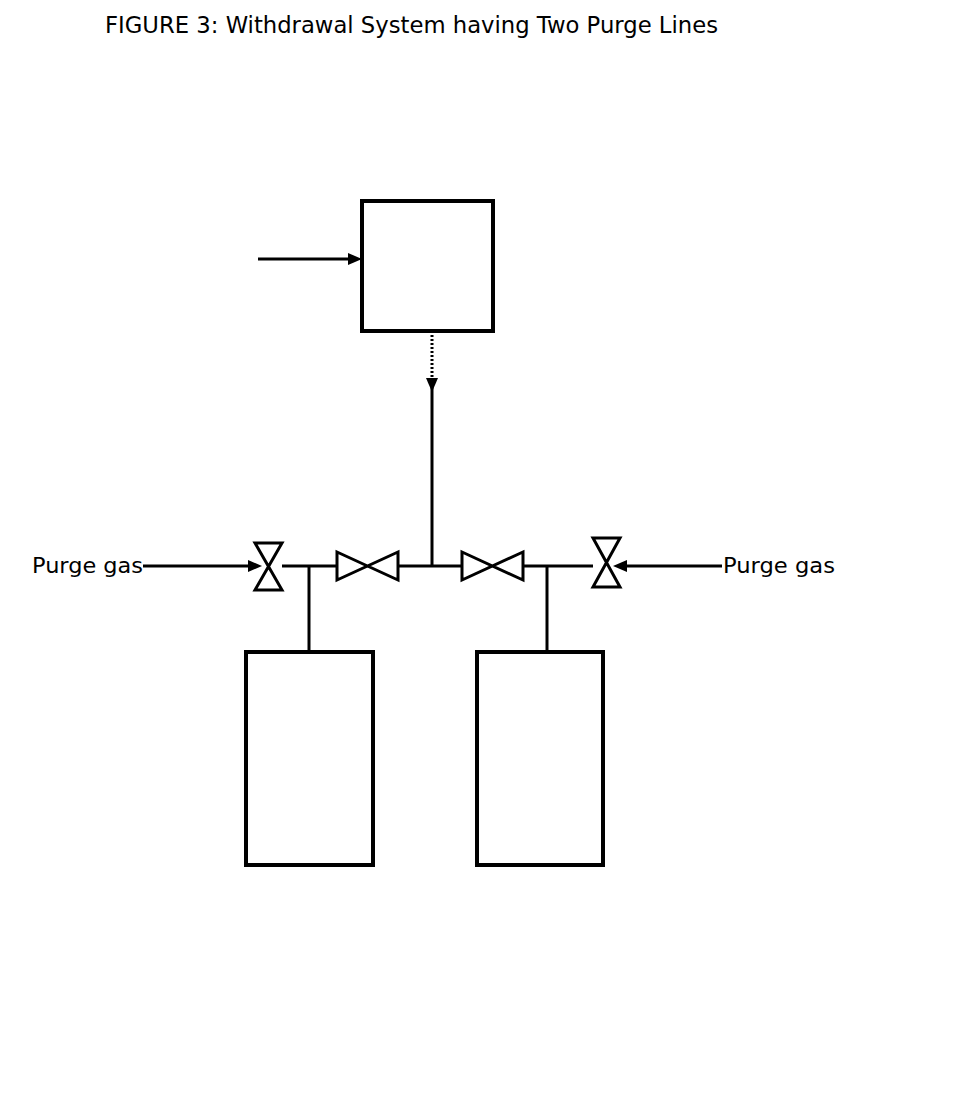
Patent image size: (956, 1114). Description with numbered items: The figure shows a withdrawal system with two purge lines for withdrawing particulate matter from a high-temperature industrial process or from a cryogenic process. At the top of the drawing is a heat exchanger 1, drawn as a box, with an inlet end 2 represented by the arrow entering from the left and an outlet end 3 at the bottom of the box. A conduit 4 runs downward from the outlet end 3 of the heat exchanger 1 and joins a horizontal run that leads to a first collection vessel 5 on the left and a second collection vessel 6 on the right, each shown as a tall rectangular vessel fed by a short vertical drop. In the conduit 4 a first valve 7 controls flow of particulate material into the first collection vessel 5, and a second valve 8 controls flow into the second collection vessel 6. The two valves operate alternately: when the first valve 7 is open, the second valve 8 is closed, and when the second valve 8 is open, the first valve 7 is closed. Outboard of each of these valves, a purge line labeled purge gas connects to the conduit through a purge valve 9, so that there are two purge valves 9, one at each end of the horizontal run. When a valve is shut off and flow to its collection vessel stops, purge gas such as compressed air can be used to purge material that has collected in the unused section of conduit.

The heat exchanger 1 is at (496, 268).
The inlet end 2 is at (338, 254).
The outlet end 3 is at (436, 357).
The conduit 4 is at (428, 441).
The first collection vessel 5 is at (313, 870).
The second collection vessel 6 is at (532, 870).
The first valve 7 is at (364, 549).
The second valve 8 is at (495, 549).
The purge valve 9 is at (270, 540).